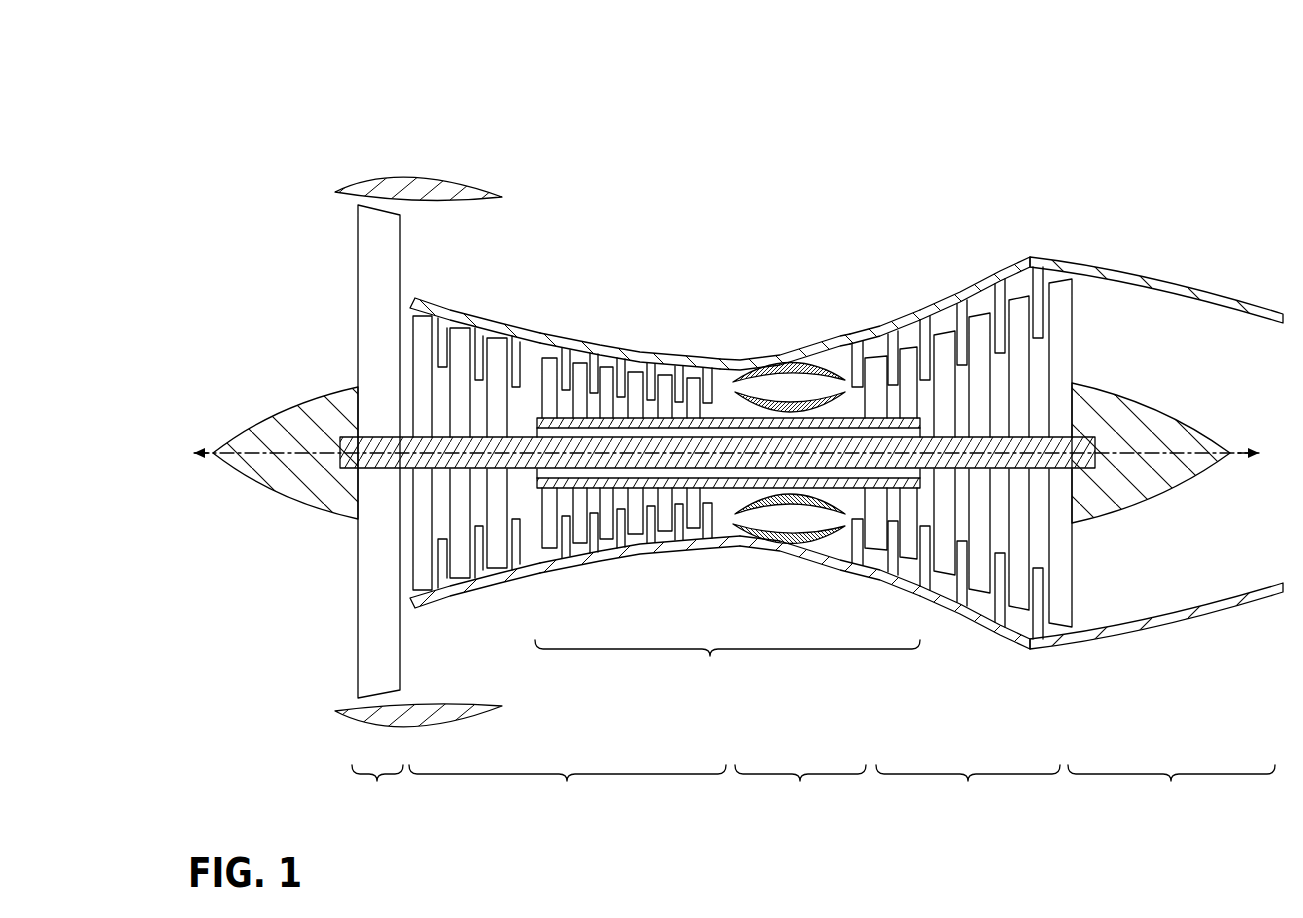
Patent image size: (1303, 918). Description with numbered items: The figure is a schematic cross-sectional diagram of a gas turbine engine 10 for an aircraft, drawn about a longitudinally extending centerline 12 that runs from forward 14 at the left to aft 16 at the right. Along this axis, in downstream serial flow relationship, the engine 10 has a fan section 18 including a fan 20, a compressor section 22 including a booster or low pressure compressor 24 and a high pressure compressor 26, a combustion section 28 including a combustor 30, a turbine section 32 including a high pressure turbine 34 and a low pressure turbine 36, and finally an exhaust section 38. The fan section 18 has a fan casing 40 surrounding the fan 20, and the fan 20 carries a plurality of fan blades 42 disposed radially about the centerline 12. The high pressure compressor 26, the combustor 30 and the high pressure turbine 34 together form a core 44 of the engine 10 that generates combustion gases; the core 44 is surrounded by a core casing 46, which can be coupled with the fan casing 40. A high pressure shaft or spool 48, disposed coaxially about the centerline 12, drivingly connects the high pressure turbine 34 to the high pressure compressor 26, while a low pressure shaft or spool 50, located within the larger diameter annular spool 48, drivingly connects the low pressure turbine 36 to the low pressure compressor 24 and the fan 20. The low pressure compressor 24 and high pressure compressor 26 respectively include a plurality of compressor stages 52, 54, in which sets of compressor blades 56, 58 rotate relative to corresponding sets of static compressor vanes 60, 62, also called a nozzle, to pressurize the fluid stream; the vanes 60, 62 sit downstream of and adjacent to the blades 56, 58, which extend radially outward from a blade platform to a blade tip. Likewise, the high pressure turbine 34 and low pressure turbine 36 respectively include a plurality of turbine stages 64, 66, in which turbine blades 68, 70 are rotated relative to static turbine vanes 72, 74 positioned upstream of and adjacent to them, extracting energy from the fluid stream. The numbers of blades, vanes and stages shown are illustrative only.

The gas turbine engine 10 is at (236, 119).
The centerline 12 is at (268, 450).
The forward 14 is at (183, 453).
The aft 16 is at (1267, 453).
The fan section 18 is at (377, 786).
The fan 20 is at (352, 262).
The compressor section 22 is at (567, 786).
The low pressure compressor 24 is at (528, 586).
The high pressure compressor 26 is at (672, 558).
The combustion section 28 is at (800, 786).
The combustor 30 is at (838, 363).
The turbine section 32 is at (968, 786).
The high pressure turbine 34 is at (853, 583).
The low pressure turbine 36 is at (968, 623).
The exhaust section 38 is at (1171, 786).
The fan casing 40 is at (420, 177).
The fan blades 42 is at (368, 647).
The core 44 is at (727, 662).
The core casing 46 is at (772, 353).
The high pressure shaft 48 is at (728, 420).
The low pressure shaft 50 is at (528, 440).
The compressor stages 52 is at (410, 290).
The compressor stages 54 is at (551, 325).
The compressor blades 56 is at (428, 320).
The compressor blades 58 is at (552, 367).
The static compressor vanes 60 is at (443, 330).
The static compressor vanes 62 is at (566, 375).
The turbine stages 64 is at (882, 323).
The turbine stages 66 is at (998, 268).
The turbine blades 68 is at (905, 353).
The turbine blades 70 is at (1017, 317).
The static turbine vanes 72 is at (893, 358).
The static turbine vanes 74 is at (1003, 303).